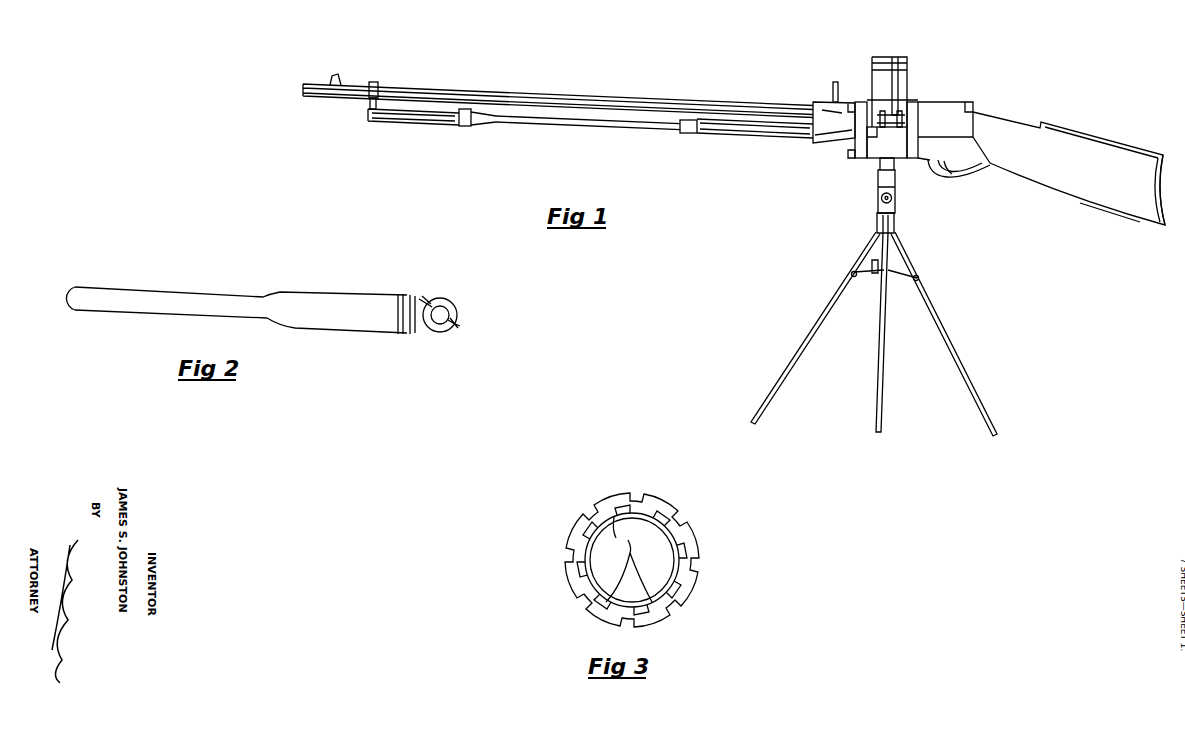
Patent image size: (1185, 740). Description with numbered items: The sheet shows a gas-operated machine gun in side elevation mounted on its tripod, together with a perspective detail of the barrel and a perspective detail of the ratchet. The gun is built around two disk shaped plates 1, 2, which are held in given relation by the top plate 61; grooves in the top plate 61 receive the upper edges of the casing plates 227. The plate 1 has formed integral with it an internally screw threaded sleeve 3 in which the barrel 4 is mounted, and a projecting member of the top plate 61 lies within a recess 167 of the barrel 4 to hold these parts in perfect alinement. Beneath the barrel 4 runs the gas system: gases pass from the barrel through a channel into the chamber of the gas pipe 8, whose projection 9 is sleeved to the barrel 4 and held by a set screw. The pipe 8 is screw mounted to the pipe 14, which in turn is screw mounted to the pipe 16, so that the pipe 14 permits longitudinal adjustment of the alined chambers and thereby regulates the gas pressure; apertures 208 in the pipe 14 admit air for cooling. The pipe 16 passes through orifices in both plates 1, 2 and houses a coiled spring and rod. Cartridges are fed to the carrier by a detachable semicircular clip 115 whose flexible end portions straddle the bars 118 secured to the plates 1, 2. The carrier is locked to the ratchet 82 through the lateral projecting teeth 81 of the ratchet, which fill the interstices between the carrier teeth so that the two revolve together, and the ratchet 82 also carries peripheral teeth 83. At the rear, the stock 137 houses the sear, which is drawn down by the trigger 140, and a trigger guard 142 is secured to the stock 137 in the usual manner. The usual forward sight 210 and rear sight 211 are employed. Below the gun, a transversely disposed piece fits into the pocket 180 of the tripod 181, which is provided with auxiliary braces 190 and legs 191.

In FIG. 1, the disk shaped plate 1 is at (853, 135).
In FIG. 1, the disk shaped plate 2 is at (920, 118).
In FIG. 1, the internally screw threaded sleeve 3 is at (835, 110).
In FIG. 1, the barrel 4 is at (567, 97).
In FIG. 2, the barrel 4 is at (288, 302).
In FIG. 1, the gas pipe 8 is at (417, 126).
In FIG. 1, the projection 9 is at (371, 103).
In FIG. 1, the pipe 14 is at (598, 124).
In FIG. 1, the pipe 16 is at (758, 134).
In FIG. 1, the top plate 61 is at (960, 105).
In FIG. 3, the lateral projecting teeth 81 is at (588, 554).
In FIG. 3, the ratchet 82 is at (694, 537).
In FIG. 3, the peripheral teeth 83 is at (667, 503).
In FIG. 1, the clip 115 is at (909, 68).
In FIG. 1, the bars 118 is at (870, 129).
In FIG. 1, the stock 137 is at (1132, 203).
In FIG. 1, the trigger 140 is at (975, 173).
In FIG. 1, the trigger guard 142 is at (950, 174).
In FIG. 2, the recess 167 is at (420, 298).
In FIG. 1, the pocket 180 is at (878, 173).
In FIG. 1, the tripod 181 is at (895, 225).
In FIG. 1, the auxiliary braces 190 is at (864, 276).
In FIG. 1, the legs 191 is at (944, 323).
In FIG. 1, the apertures 208 is at (495, 116).
In FIG. 1, the forward sight 210 is at (333, 78).
In FIG. 1, the rear sight 211 is at (834, 88).
In FIG. 1, the casing plates 227 is at (963, 130).